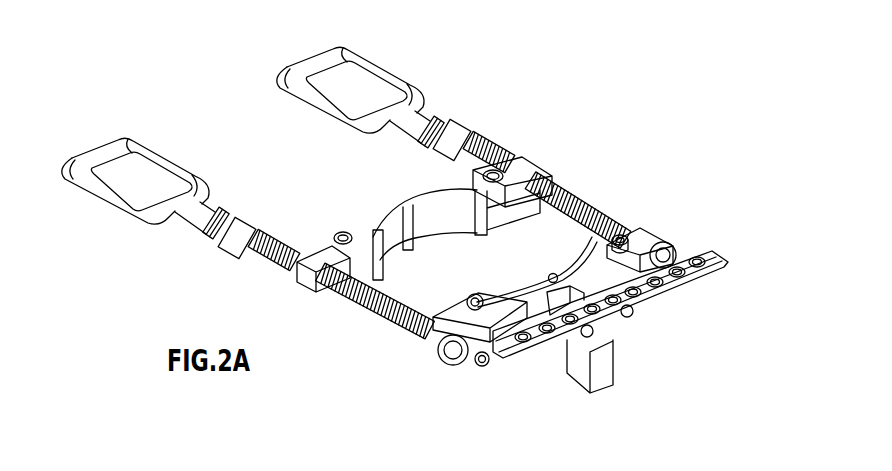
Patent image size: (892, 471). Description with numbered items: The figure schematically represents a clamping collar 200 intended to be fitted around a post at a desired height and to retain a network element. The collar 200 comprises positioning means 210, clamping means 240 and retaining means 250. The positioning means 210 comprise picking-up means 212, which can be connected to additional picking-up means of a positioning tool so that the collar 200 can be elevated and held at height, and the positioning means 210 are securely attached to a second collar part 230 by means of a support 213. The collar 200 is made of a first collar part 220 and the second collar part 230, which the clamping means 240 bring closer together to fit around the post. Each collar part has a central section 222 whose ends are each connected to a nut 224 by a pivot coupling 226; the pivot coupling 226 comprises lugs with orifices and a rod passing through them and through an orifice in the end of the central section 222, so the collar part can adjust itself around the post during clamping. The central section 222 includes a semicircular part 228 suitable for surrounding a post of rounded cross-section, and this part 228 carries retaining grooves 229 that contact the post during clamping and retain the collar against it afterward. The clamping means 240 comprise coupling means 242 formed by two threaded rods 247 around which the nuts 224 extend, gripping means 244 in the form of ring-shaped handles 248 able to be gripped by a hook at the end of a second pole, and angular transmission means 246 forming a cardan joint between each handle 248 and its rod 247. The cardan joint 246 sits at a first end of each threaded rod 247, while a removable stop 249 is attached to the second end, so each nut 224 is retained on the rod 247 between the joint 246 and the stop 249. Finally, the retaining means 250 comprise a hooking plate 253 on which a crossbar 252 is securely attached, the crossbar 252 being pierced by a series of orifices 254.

The clamping collar 200 is at (205, 100).
The gripping means 244 is at (353, 76).
The ring-shaped handle 248 is at (305, 62).
The angular transmission means 246 is at (445, 120).
The clamping means 240 is at (505, 135).
The semicircular part 228 is at (441, 200).
The coupling means 242 is at (589, 198).
The threaded rod 247 is at (580, 210).
The hooking plate 253 is at (624, 234).
The retaining means 250 is at (648, 270).
The crossbar 252 is at (705, 246).
The pivot coupling 226 is at (346, 230).
The first collar part 220 is at (367, 230).
The central section 222 is at (508, 201).
The retaining groove 229 is at (415, 250).
The second collar part 230 is at (480, 293).
The support 213 is at (566, 275).
The nut 224 is at (303, 277).
The positioning means 210 is at (660, 327).
The picking-up means 212 is at (597, 370).
The orifice 254 is at (549, 344).
The removable stop 249 is at (477, 376).